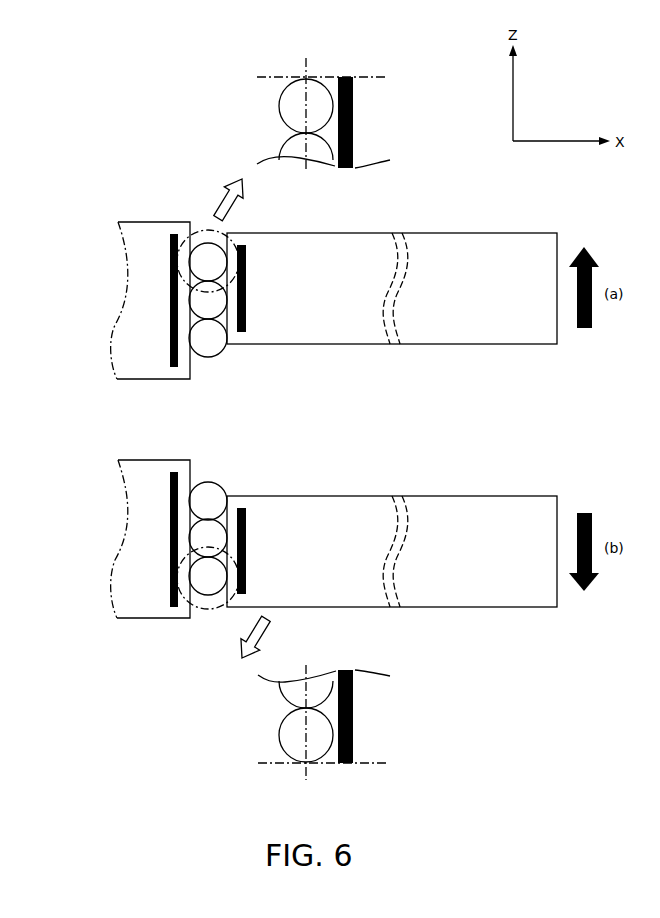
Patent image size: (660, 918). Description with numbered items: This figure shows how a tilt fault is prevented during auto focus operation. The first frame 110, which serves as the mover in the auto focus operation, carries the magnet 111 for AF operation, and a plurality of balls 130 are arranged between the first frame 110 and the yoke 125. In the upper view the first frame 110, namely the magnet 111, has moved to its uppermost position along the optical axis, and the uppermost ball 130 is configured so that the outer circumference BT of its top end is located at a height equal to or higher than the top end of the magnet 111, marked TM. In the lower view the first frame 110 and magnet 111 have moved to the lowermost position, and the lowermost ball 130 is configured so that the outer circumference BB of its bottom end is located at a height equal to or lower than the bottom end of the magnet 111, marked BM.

The first frame 110 is at (447, 335).
The magnet 111 is at (247, 322).
The yoke 125 is at (170, 352).
The balls 130 is at (286, 103).
The outer circumference of top end of uppermost ball BT is at (304, 77).
The top of magnetic member TM is at (344, 77).
The outer circumference of bottom end of lowermost ball BB is at (305, 764).
The bottom of magnetic member BM is at (347, 765).